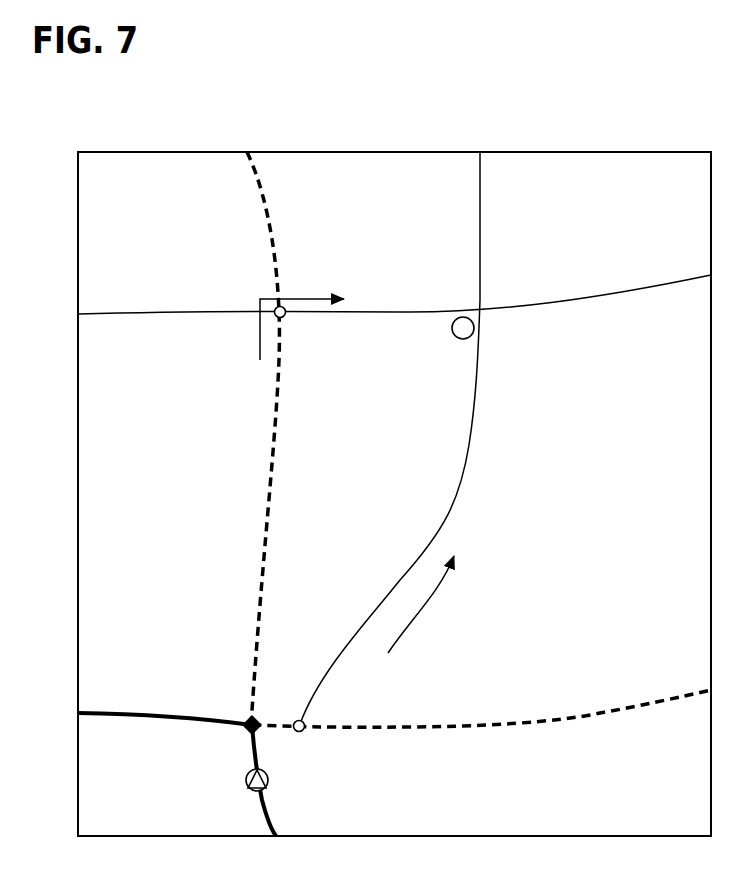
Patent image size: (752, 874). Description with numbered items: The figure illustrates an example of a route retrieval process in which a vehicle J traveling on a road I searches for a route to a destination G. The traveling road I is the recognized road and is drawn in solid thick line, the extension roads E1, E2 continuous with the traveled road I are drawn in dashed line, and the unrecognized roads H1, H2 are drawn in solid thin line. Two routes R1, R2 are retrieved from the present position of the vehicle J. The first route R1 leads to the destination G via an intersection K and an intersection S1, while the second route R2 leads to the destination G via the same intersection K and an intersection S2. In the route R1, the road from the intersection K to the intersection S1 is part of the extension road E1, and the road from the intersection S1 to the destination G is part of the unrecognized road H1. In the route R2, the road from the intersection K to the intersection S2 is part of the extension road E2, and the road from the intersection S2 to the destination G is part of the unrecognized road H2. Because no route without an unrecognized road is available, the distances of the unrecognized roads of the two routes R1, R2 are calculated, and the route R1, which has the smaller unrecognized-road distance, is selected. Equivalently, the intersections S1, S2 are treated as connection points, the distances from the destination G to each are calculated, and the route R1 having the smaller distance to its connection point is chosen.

The unrecognized road H1 is at (416, 309).
The unrecognized road H2 is at (477, 421).
The destination G is at (463, 328).
The extension road E1 is at (266, 500).
The extension road E2 is at (503, 722).
The traveling road I is at (268, 802).
The intersection K is at (248, 717).
The vehicle J is at (244, 772).
The intersection S1 is at (288, 320).
The intersection S2 is at (300, 736).
The route R1 is at (259, 322).
The route R2 is at (420, 617).